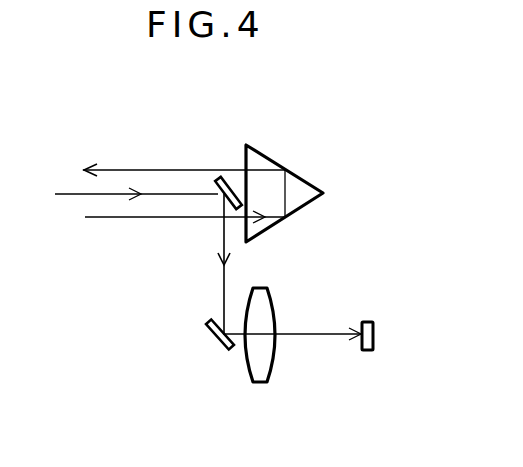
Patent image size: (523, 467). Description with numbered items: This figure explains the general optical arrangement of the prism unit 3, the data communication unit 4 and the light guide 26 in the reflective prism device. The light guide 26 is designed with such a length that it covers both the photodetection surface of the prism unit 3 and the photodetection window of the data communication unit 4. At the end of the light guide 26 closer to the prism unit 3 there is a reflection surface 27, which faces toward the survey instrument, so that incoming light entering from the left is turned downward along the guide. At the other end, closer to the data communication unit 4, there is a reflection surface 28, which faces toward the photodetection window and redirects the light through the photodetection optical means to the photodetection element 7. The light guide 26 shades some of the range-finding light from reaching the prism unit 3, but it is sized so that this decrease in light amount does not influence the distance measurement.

The prism unit 3 is at (300, 157).
The data communication unit 4 is at (375, 394).
The photodetection element 7 is at (375, 334).
The light guide 26 is at (198, 272).
The reflection surface 27 is at (227, 178).
The reflection surface 28 is at (218, 343).